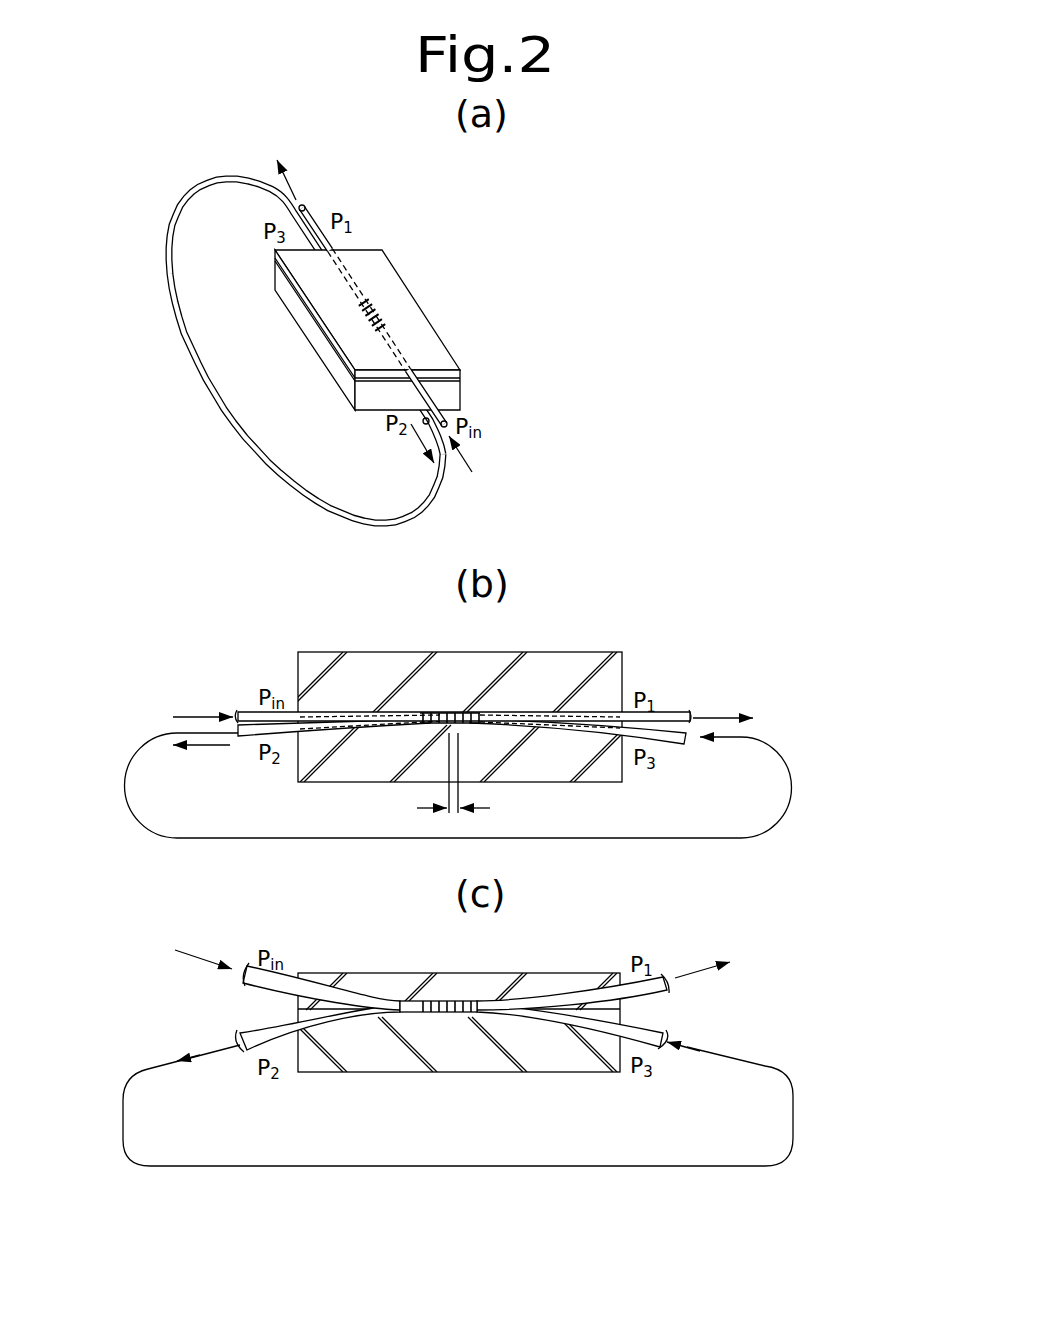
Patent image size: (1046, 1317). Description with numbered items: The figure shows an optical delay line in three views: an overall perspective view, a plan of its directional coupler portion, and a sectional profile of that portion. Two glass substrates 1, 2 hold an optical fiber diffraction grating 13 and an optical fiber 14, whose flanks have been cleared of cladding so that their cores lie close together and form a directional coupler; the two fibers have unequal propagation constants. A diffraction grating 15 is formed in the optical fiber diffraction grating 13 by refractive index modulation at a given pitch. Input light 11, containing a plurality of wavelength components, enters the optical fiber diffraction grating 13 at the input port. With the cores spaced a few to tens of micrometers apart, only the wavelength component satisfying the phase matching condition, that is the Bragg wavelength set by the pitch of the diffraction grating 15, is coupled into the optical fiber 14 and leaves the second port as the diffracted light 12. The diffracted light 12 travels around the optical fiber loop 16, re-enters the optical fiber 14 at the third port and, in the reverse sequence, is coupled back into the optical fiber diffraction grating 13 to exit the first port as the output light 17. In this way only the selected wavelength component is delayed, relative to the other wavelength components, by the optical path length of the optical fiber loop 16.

The glass substrate 1 is at (426, 344).
The glass substrate 2 is at (452, 394).
The input light 11 is at (467, 457).
The diffracted light 12 is at (417, 440).
The optical fiber diffraction grating 13 is at (313, 208).
The optical fiber 14 is at (320, 236).
The diffraction grating 15 is at (365, 304).
The optical fiber loop 16 is at (228, 418).
The output light 17 is at (291, 184).